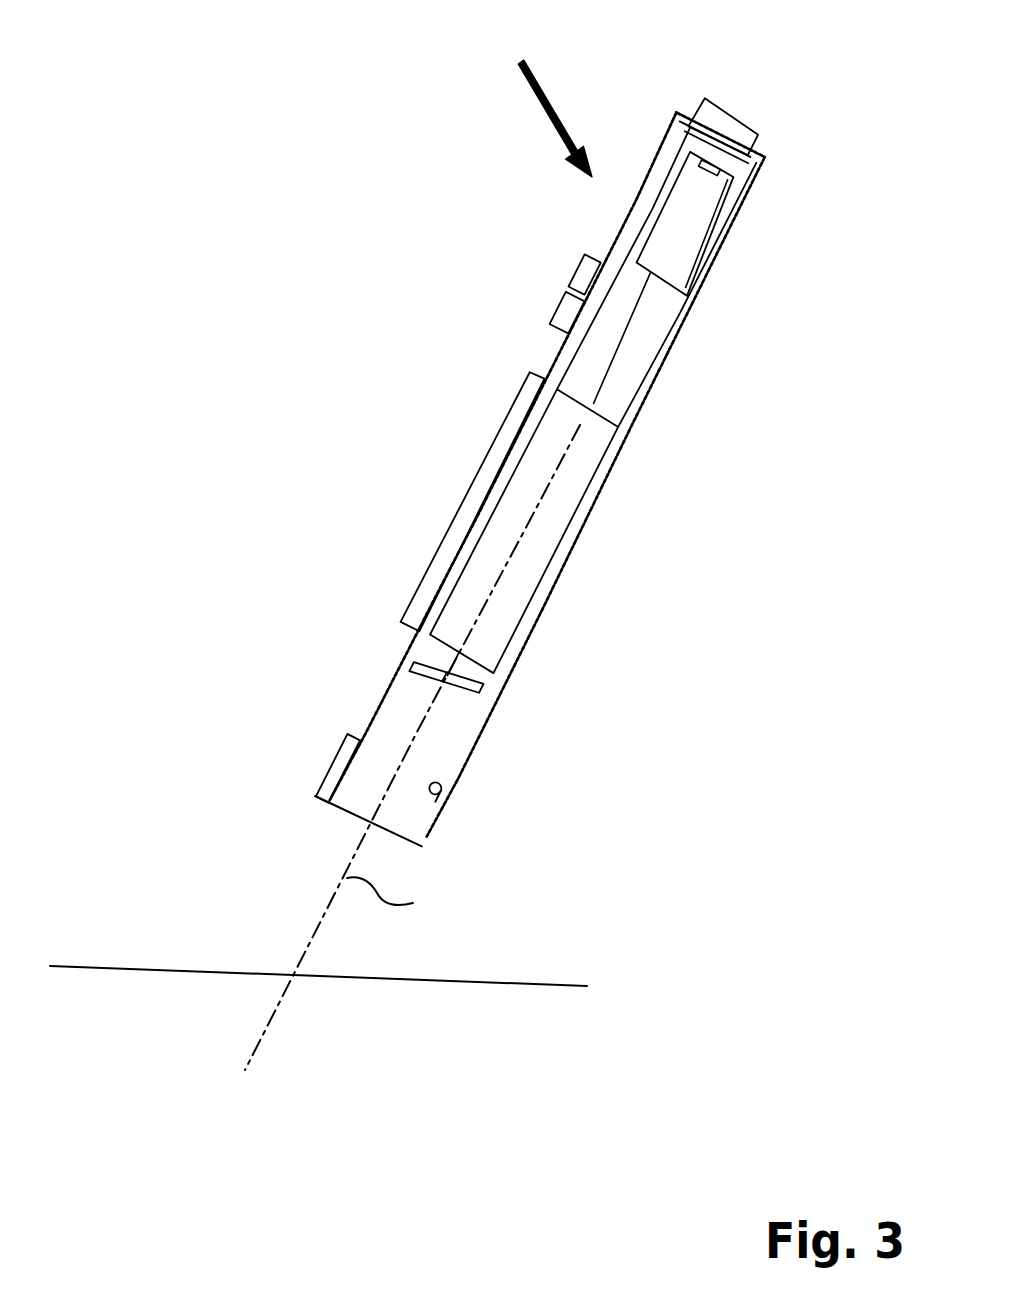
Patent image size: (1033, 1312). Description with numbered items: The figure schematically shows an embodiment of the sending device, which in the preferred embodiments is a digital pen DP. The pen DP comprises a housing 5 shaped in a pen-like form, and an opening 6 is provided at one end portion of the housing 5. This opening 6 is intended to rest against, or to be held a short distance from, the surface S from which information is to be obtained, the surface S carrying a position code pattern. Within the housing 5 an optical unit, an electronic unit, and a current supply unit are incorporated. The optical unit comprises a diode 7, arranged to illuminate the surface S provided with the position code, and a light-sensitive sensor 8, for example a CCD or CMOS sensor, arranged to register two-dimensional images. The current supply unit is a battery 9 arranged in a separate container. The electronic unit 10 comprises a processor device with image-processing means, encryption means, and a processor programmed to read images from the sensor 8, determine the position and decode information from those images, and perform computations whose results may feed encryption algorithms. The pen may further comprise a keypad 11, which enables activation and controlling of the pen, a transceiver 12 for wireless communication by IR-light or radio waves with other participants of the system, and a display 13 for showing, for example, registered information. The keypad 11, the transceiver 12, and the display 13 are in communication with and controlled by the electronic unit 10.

The housing 5 is at (622, 452).
The opening 6 is at (368, 823).
The diode 7 is at (447, 797).
The light-sensitive sensor 8 is at (472, 683).
The battery 9 is at (682, 232).
The electronic unit 10 is at (525, 568).
The keypad 11 is at (579, 273).
The transceiver 12 is at (731, 116).
The display 13 is at (480, 493).
The surface S is at (487, 977).
The digital pen DP is at (535, 95).